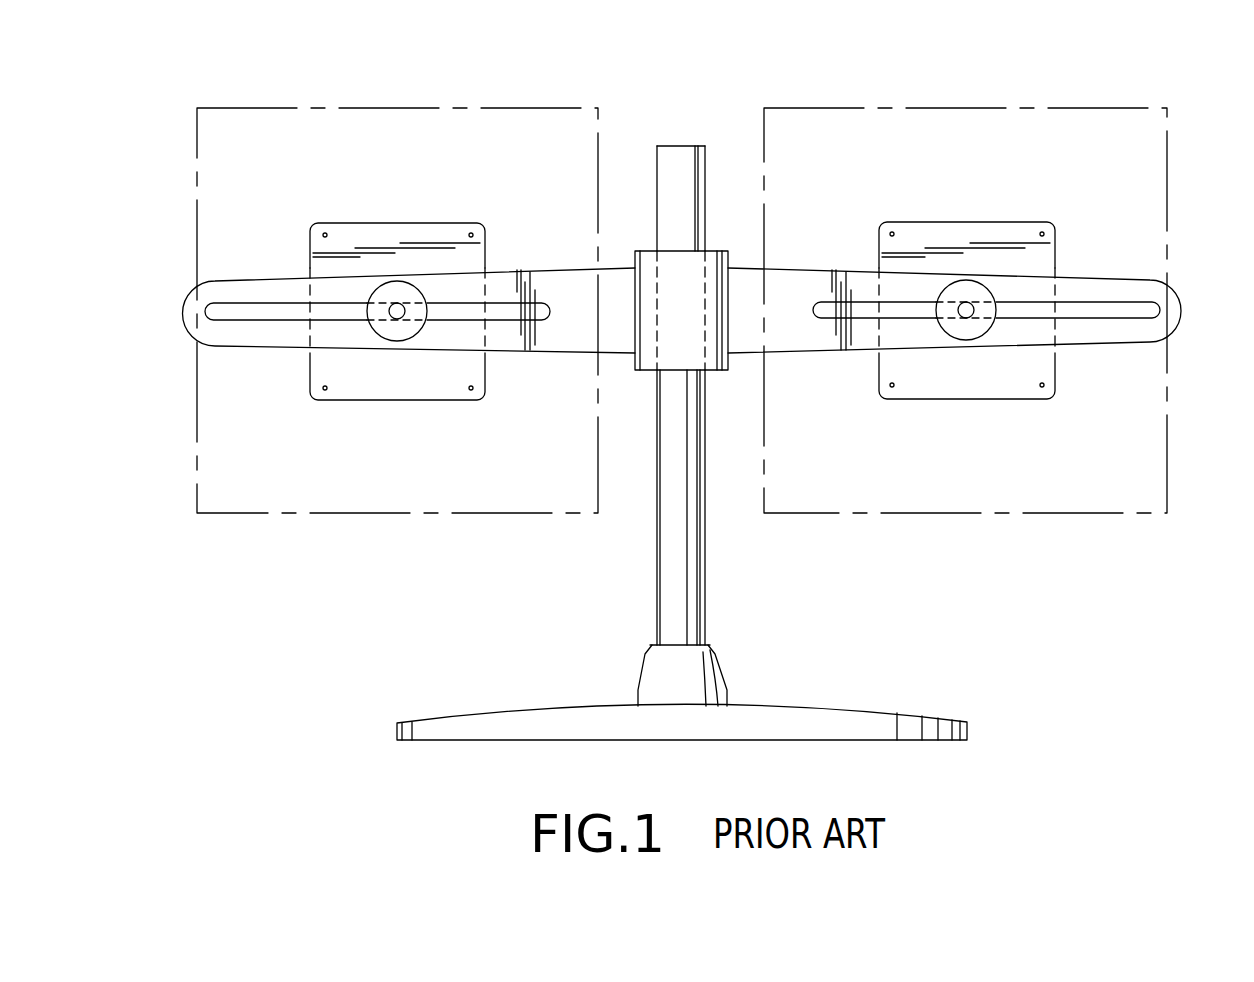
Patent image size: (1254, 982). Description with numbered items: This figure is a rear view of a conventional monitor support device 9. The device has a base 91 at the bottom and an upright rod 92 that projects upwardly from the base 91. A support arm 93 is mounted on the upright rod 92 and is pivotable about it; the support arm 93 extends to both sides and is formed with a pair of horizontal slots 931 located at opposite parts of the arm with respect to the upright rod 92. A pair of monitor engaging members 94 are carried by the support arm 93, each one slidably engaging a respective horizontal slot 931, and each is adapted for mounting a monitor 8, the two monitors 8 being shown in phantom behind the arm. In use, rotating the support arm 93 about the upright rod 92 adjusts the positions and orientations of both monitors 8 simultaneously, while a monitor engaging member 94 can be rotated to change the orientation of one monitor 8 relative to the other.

The monitor 8 is at (563, 137).
The conventional monitor support device 9 is at (597, 592).
The base 91 is at (777, 717).
The upright rod 92 is at (688, 582).
The support arm 93 is at (1153, 290).
The horizontal slot 931 is at (270, 313).
The monitor engaging member 94 is at (398, 381).